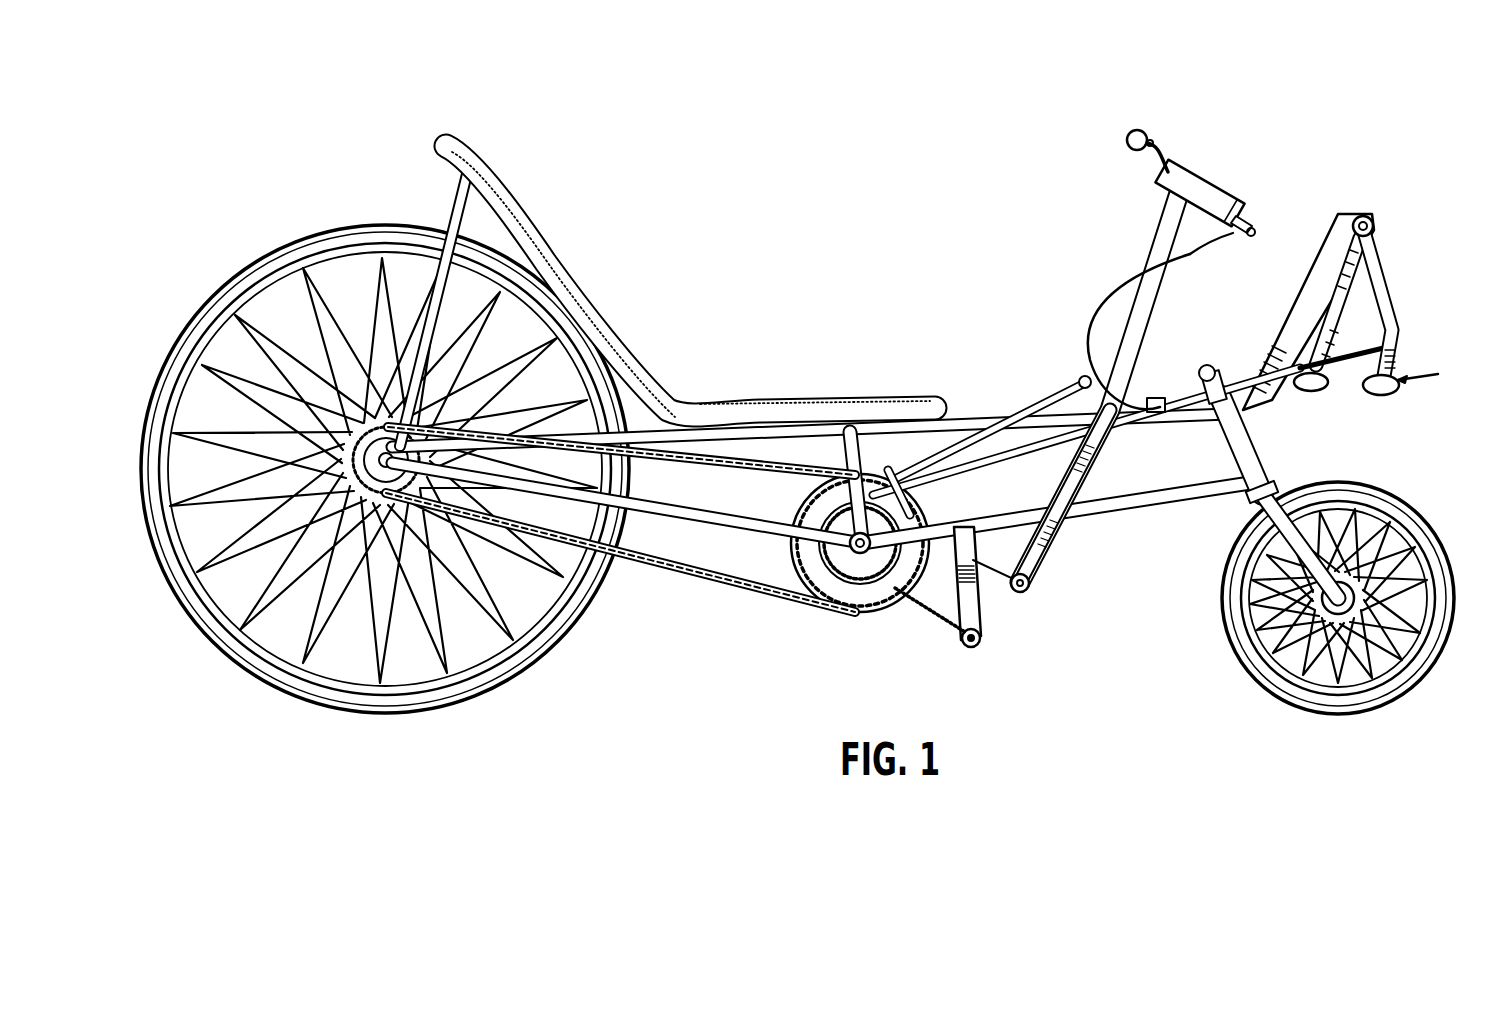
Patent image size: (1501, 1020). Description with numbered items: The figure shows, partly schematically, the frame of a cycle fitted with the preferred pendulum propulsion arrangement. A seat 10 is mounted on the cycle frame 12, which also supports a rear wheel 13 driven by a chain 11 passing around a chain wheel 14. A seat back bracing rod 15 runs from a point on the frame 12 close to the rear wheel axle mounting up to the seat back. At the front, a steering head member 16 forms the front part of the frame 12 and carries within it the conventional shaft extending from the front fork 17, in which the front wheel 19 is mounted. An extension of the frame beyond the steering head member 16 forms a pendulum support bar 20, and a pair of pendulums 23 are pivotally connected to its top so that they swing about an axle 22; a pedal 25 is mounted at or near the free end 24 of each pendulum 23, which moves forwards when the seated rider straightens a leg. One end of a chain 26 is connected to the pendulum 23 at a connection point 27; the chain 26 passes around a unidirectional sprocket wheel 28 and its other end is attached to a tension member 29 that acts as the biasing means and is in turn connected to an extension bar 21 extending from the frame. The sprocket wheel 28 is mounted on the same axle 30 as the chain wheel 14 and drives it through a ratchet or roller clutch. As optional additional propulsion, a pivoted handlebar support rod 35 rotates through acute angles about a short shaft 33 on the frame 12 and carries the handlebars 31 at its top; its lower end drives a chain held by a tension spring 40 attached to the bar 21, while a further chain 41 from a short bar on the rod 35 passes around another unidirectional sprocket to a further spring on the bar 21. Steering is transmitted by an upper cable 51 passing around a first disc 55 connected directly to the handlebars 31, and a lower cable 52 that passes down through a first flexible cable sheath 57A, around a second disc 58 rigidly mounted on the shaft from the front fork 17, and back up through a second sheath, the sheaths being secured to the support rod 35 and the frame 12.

The seat 10 is at (560, 232).
The chain 11 is at (697, 580).
The cycle frame 12 is at (780, 420).
The rear wheel 13 is at (331, 240).
The chain wheel 14 is at (820, 573).
The seat back bracing rod 15 is at (450, 208).
The steering head member 16 is at (1256, 448).
The front fork 17 is at (1340, 515).
The front wheel 19 is at (1420, 548).
The pendulum support bar 20 is at (1325, 262).
The extension bar 21 is at (981, 630).
The axle 22 is at (1370, 216).
The pendulum 23 is at (1385, 266).
The free end of pendulum 24 is at (1430, 374).
The pedal 25 is at (1388, 392).
The chain 26 is at (950, 462).
The connection point 27 is at (1392, 346).
The sprocket wheel 28 is at (852, 568).
The tension member 29 is at (975, 560).
The axle 30 is at (918, 505).
The handlebars 31 is at (1130, 132).
The short shaft or axle 33 is at (1066, 396).
The pivoted handlebar support rod 35 is at (1185, 228).
The tension spring 40 is at (940, 625).
The chain 41 is at (892, 473).
The upper cable 51 is at (1218, 250).
The lower cable 52 is at (1185, 392).
The first disc 55 is at (1245, 214).
The first flexible cable sheath 57A is at (1108, 300).
The second disc 58 is at (1218, 372).